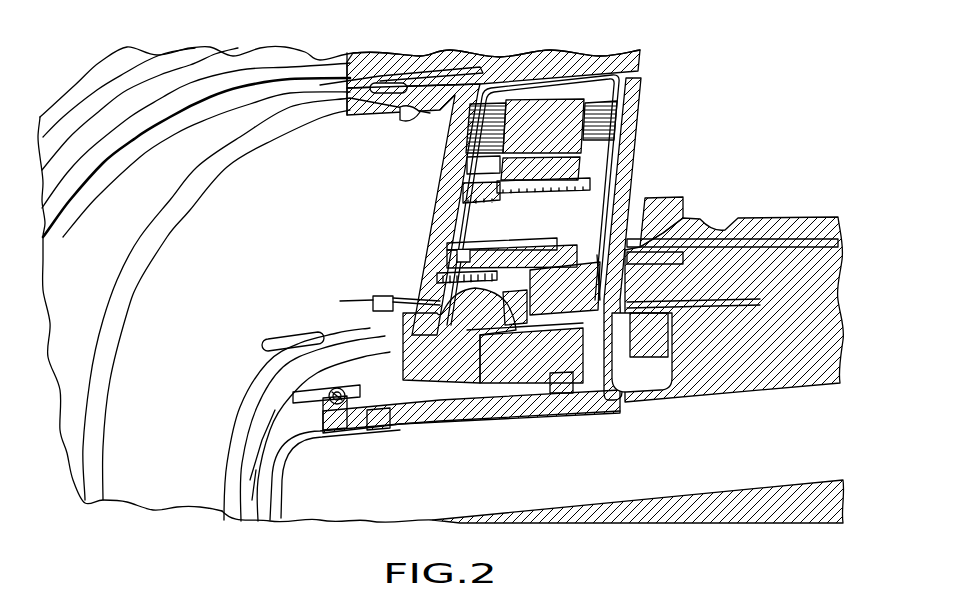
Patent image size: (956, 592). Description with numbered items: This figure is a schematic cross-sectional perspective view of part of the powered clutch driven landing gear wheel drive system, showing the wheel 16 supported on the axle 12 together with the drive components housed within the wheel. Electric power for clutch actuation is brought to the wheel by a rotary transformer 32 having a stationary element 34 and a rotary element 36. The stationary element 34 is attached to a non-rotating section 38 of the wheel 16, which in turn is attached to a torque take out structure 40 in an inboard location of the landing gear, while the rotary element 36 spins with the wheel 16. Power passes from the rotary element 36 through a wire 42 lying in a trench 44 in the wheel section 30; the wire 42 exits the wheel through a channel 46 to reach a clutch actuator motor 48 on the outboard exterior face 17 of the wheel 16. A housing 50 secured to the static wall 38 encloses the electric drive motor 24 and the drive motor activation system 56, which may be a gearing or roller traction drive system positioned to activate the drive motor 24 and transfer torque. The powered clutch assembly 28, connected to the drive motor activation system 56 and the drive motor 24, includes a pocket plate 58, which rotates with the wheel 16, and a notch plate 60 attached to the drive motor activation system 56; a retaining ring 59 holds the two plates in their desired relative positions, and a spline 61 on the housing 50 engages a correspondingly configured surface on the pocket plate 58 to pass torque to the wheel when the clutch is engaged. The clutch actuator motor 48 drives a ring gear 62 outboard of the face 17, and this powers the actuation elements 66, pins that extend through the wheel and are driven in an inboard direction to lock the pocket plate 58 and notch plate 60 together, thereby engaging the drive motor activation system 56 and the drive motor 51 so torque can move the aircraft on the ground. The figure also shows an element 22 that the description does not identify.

The axle 12 is at (719, 454).
The wheel 16 is at (148, 293).
The outboard exterior face 17 is at (430, 143).
The flange 22 is at (598, 56).
The electric drive motor 24 is at (623, 174).
The powered clutch assembly 28 is at (430, 276).
The wheel section 30 is at (493, 369).
The rotary transformer 32 is at (608, 298).
The stationary element 34 is at (618, 337).
The rotary element 36 is at (603, 222).
The non-rotating section 38 is at (690, 228).
The torque take out structure 40 is at (665, 252).
The wire 42 is at (447, 312).
The trench 44 is at (572, 387).
The channel 46 is at (385, 297).
The clutch actuator motor 48 is at (372, 300).
The housing 50 is at (628, 150).
The drive motor 51 is at (628, 116).
The drive motor activation system 56 is at (470, 233).
The pocket plate 58 is at (548, 262).
The retaining ring 59 is at (552, 278).
The notch plate 60 is at (458, 308).
The spline 61 is at (550, 265).
The ring gear 62 is at (220, 436).
The actuation elements 66 is at (285, 338).